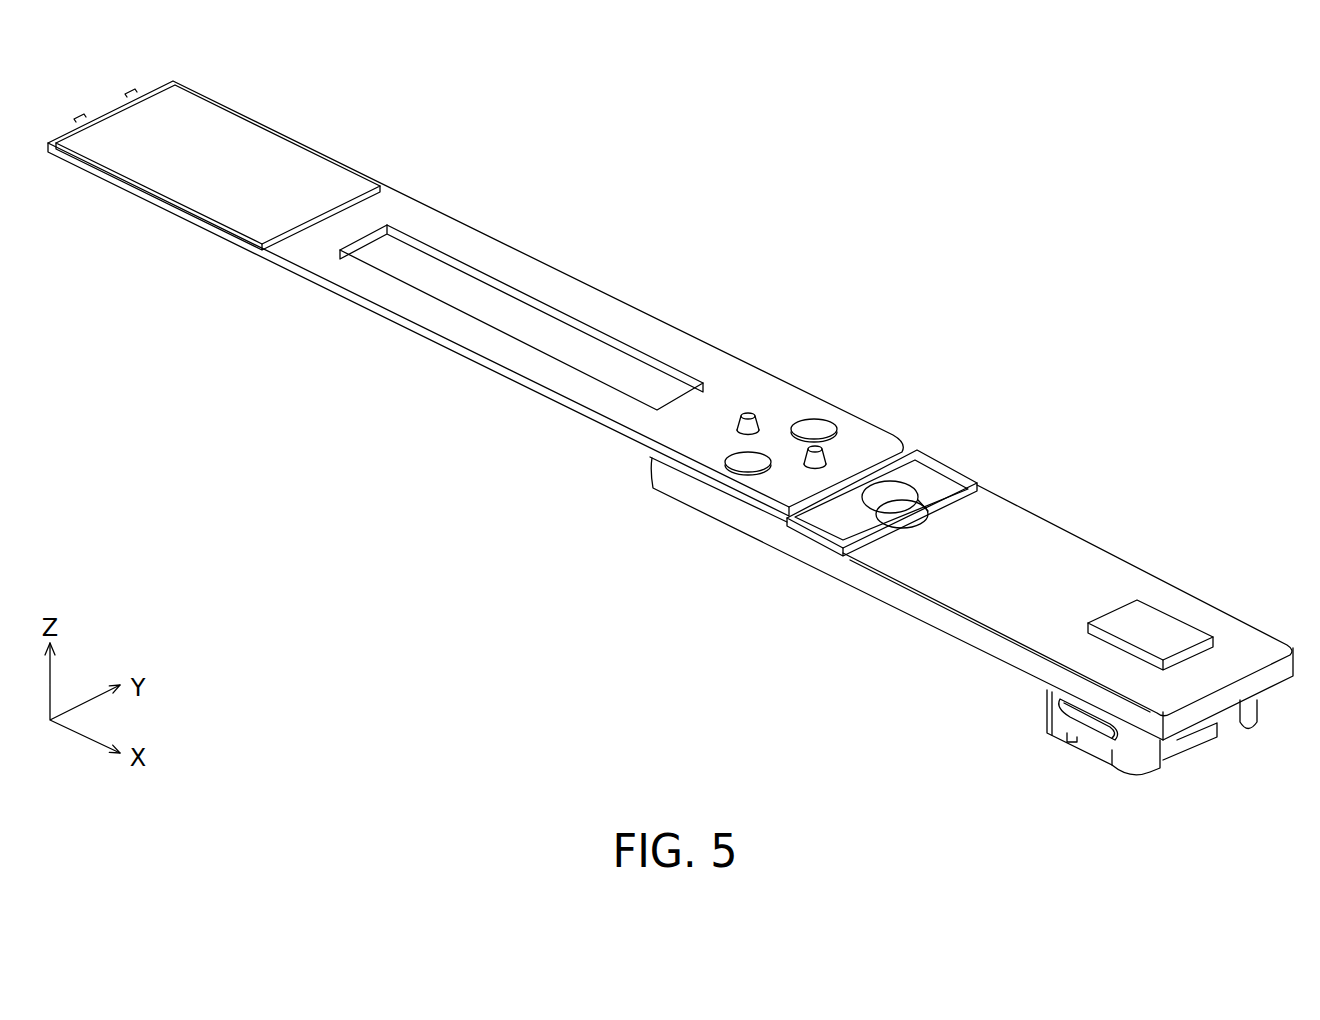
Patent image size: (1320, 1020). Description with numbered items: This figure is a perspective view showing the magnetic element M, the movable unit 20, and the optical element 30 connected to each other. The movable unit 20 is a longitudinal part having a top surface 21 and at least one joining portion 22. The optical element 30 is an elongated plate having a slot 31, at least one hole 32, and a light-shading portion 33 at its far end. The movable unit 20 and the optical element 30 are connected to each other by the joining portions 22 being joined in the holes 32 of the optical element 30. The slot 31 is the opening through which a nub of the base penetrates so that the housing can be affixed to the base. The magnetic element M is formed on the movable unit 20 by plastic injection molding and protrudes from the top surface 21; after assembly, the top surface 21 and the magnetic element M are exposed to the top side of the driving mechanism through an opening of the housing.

The movable unit 20 is at (1011, 501).
The top surface 21 is at (1048, 543).
The joining portion 22 is at (748, 414).
The optical element 30 is at (292, 278).
The slot 31 is at (458, 272).
The hole 32 is at (815, 442).
The light-shading portion 33 is at (258, 144).
The magnetic element M is at (1164, 626).